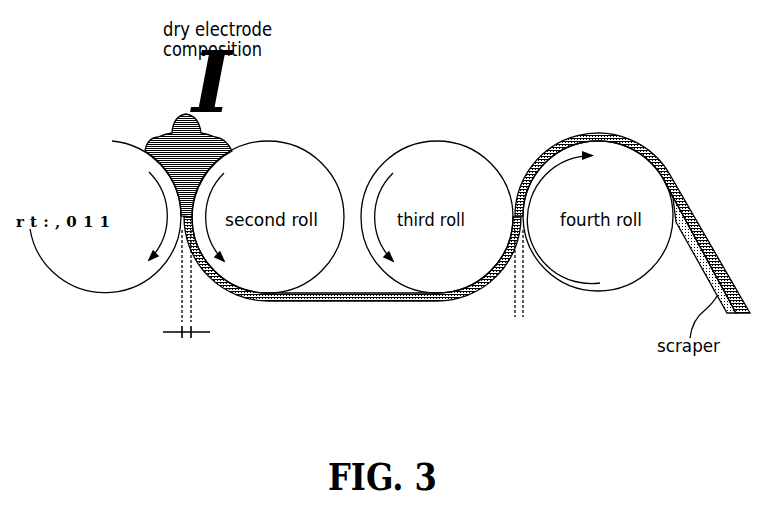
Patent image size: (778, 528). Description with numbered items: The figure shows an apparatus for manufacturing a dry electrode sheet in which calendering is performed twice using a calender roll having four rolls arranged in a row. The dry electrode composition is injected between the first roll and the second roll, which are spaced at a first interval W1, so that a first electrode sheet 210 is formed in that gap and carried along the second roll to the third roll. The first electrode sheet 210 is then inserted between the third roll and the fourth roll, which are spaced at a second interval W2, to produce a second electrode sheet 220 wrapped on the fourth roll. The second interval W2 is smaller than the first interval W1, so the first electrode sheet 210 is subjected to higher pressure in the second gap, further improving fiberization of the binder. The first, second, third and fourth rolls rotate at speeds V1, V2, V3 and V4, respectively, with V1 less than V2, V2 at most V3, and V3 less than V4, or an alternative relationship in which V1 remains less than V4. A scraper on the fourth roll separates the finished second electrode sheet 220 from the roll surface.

The first electrode sheet 210 is at (349, 305).
The second electrode sheet 220 is at (655, 149).
The rotational speed of the first roll V1 is at (144, 227).
The rotational speed of the second roll V2 is at (230, 228).
The rotational speed of the third roll V3 is at (400, 228).
The rotational speed of the fourth roll V4 is at (577, 216).
The first interval W1 is at (182, 309).
The second interval W2 is at (515, 307).